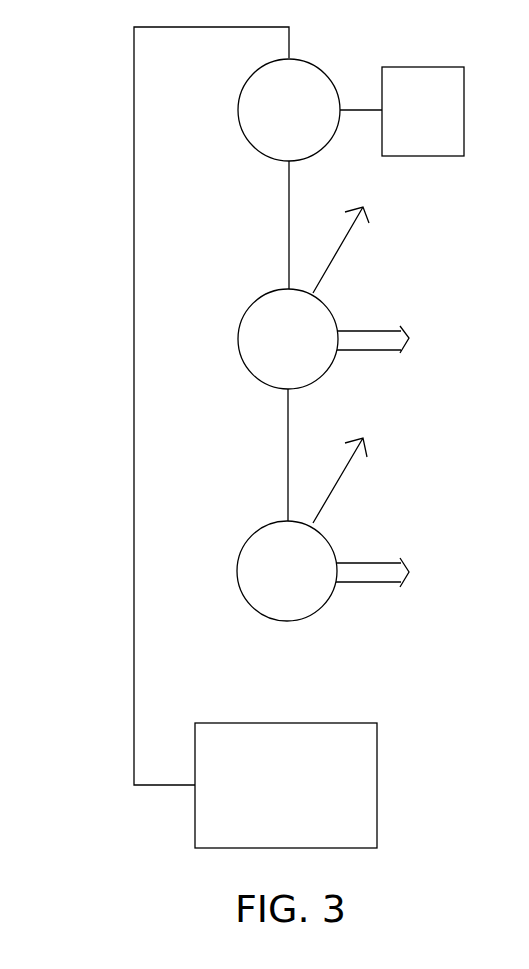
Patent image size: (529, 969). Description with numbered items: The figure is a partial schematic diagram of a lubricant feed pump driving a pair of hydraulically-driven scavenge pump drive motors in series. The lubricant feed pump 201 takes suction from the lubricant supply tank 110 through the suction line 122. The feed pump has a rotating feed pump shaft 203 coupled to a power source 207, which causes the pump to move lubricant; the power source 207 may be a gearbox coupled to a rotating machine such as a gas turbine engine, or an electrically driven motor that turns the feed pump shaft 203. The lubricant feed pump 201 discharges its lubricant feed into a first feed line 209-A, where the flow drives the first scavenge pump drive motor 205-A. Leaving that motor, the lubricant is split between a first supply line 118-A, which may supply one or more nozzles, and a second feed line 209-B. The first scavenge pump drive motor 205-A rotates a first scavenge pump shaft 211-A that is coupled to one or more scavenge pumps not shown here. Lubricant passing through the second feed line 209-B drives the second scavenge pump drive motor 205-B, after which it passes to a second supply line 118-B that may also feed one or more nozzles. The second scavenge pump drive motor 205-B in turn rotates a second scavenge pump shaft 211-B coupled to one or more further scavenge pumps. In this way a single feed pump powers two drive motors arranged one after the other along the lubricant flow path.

The suction line 122 is at (133, 523).
The lubricant feed pump 201 is at (272, 121).
The feed pump shaft 203 is at (356, 109).
The power source 207 is at (406, 121).
The first feed line 209-A is at (286, 263).
The first scavenge pump drive motor 205-A is at (261, 350).
The first supply line 118-A is at (338, 252).
The first scavenge pump shaft 211-A is at (368, 340).
The second feed line 209-B is at (286, 494).
The second scavenge pump drive motor 205-B is at (260, 582).
The second supply line 118-B is at (338, 483).
The second scavenge pump shaft 211-B is at (368, 572).
The lubricant supply tank 110 is at (271, 796).